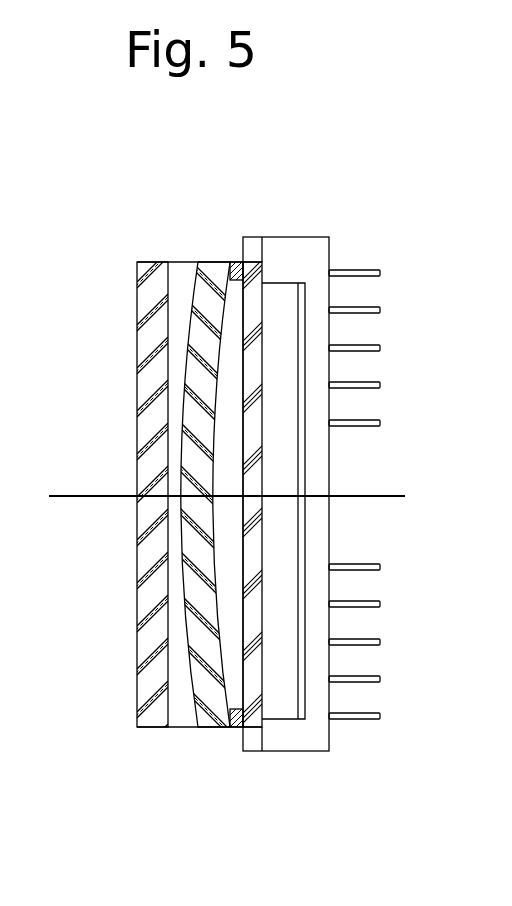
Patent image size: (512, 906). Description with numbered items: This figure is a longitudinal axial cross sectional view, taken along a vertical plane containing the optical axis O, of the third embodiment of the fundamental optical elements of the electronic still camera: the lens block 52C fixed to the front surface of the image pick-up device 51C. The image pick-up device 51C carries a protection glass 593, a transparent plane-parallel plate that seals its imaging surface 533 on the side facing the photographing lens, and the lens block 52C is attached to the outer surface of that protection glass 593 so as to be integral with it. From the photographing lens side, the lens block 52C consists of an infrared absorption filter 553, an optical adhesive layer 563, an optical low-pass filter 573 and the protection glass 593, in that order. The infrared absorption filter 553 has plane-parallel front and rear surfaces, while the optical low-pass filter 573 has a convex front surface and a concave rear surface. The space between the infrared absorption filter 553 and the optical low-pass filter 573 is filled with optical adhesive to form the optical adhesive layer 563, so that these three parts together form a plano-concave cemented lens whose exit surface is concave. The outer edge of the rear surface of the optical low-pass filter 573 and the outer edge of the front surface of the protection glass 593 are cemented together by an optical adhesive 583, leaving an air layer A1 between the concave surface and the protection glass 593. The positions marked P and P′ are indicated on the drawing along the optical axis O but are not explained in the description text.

The lens block 52C is at (263, 183).
The image pick-up device 51C is at (340, 454).
The infrared absorption filter 553 is at (147, 262).
The optical low-pass filter 573 is at (204, 272).
The protection glass 593 is at (253, 262).
The optical adhesive layer 563 is at (182, 710).
The optical adhesive 583 is at (235, 728).
The imaging surface 533 is at (302, 548).
The air layer A1 is at (225, 455).
The principal point position P is at (252, 493).
The image plane position P′ is at (301, 494).
The optical axis O is at (242, 497).